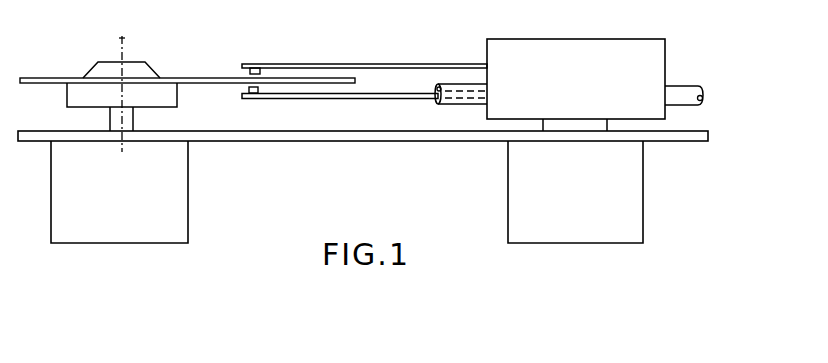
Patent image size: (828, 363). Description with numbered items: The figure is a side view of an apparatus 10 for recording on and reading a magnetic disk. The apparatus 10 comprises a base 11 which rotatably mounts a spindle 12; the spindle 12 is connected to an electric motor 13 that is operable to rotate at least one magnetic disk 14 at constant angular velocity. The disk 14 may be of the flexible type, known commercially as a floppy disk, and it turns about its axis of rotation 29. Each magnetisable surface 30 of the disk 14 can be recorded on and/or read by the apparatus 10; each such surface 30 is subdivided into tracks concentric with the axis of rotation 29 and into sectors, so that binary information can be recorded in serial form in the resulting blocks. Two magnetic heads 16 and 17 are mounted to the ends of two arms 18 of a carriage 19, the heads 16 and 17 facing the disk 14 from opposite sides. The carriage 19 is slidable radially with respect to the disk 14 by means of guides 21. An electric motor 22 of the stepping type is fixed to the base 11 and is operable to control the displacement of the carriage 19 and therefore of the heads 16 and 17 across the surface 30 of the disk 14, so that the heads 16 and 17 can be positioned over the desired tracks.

The apparatus 10 is at (345, 43).
The base 11 is at (336, 141).
The spindle 12 is at (168, 98).
The electric motor 13 is at (178, 205).
The magnetic disk 14 is at (48, 77).
The magnetic head 16 is at (250, 72).
The magnetic head 17 is at (250, 92).
The arms 18 is at (400, 64).
The carriage 19 is at (652, 62).
The guides 21 is at (690, 88).
The electric motor of the stepping type 22 is at (522, 188).
The axis of rotation 29 is at (124, 37).
The magnetisable surface 30 is at (210, 77).